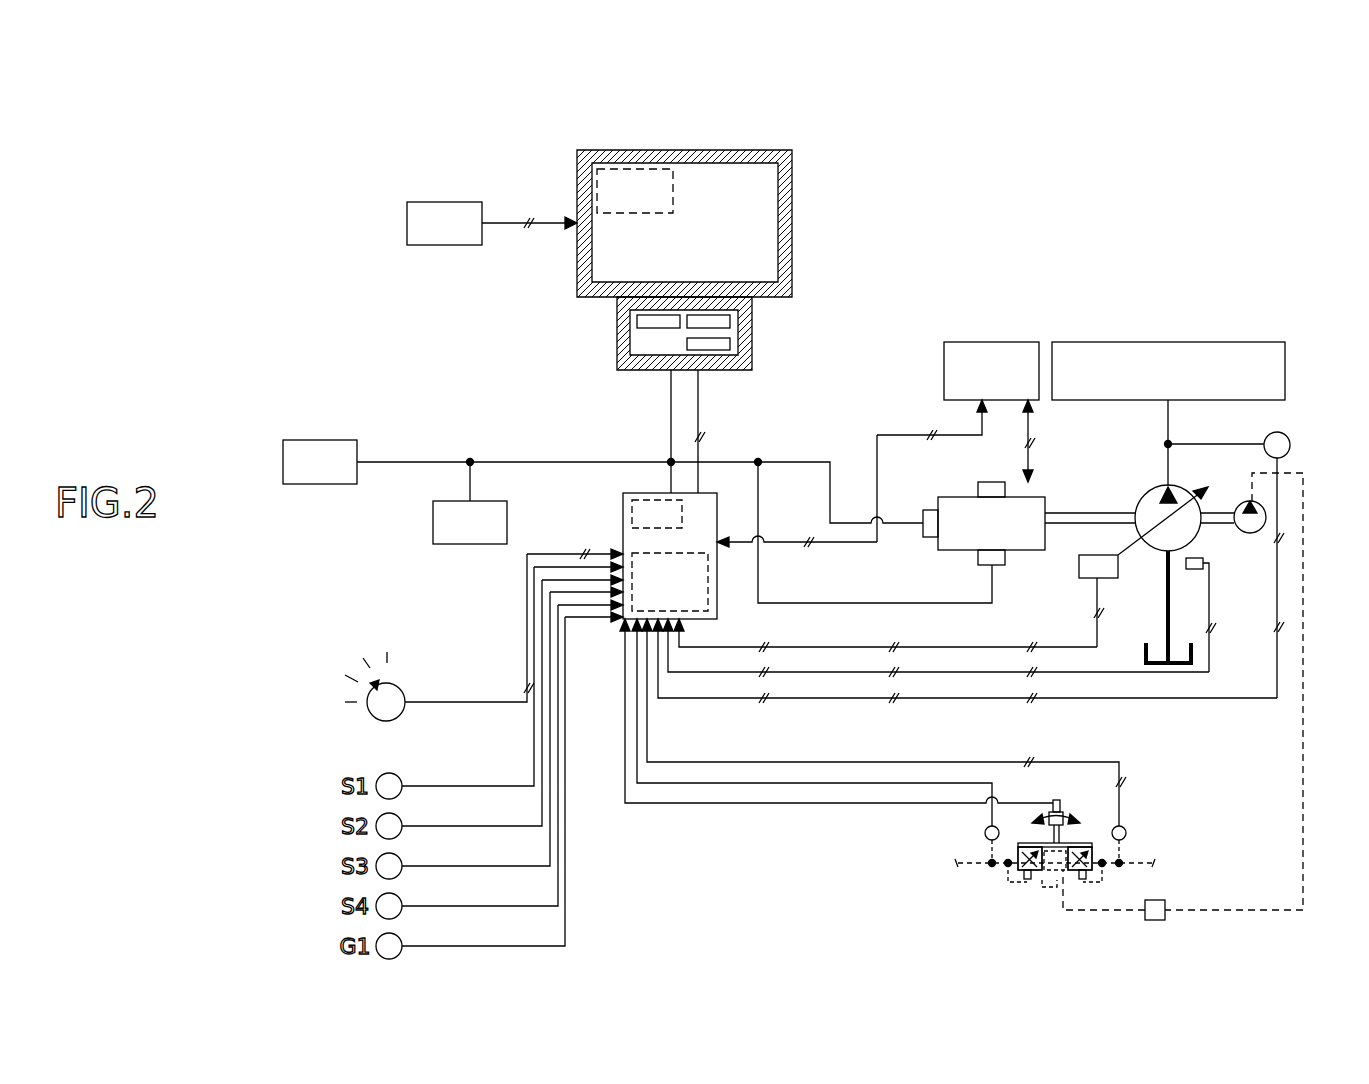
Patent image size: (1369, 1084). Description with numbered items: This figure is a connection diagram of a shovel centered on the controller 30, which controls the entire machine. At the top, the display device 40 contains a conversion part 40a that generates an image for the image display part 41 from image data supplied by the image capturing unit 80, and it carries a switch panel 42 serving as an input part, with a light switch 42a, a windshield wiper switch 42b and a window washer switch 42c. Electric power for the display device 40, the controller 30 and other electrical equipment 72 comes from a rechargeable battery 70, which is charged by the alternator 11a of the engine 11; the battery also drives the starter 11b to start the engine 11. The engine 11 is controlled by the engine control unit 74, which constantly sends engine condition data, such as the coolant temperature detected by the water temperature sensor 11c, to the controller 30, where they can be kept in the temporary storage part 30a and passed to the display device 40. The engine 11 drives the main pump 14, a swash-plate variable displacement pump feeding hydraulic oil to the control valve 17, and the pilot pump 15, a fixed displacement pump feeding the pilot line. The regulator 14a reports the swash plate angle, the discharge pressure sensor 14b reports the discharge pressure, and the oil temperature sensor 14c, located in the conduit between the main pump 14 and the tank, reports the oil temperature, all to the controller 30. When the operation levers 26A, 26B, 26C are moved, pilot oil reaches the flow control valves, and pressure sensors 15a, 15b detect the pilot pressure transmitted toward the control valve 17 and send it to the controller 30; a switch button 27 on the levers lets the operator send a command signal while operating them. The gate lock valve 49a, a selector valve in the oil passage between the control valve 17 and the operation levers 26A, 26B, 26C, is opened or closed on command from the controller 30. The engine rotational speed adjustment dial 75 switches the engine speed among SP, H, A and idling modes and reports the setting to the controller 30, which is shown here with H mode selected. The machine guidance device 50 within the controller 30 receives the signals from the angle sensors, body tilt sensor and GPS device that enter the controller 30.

The display device 40 is at (705, 88).
The conversion part 40a is at (631, 163).
The image display part 41 is at (708, 200).
The switch panel 42 is at (752, 314).
The light switch 42a is at (738, 323).
The windshield wiper switch 42b is at (735, 346).
The window washer switch 42c is at (637, 320).
The image capturing unit 80 is at (445, 246).
The electrical equipment 72 is at (325, 485).
The rechargeable battery 70 is at (470, 545).
The controller 30 is at (623, 537).
The temporary storage part 30a is at (632, 513).
The machine guidance device 50 is at (668, 553).
The engine rotational speed adjustment dial 75 is at (405, 689).
The engine control unit 74 is at (1000, 342).
The control valve 17 is at (1222, 342).
The engine 11 is at (1043, 497).
The alternator 11a is at (1005, 562).
The starter 11b is at (923, 536).
The water temperature sensor 11c is at (978, 486).
The main pump 14 is at (1140, 497).
The regulator 14a is at (1110, 580).
The discharge pressure sensor 14b is at (1290, 437).
The oil temperature sensor 14c is at (1198, 559).
The pilot pump 15 is at (1252, 534).
The pressure sensor 15a is at (1126, 835).
The pressure sensor 15b is at (985, 835).
The switch button 27 is at (1055, 800).
The operation lever 26A is at (1062, 818).
The operation lever 26B is at (1030, 858).
The operation lever 26C is at (1080, 858).
The gate lock valve 49a is at (1160, 900).